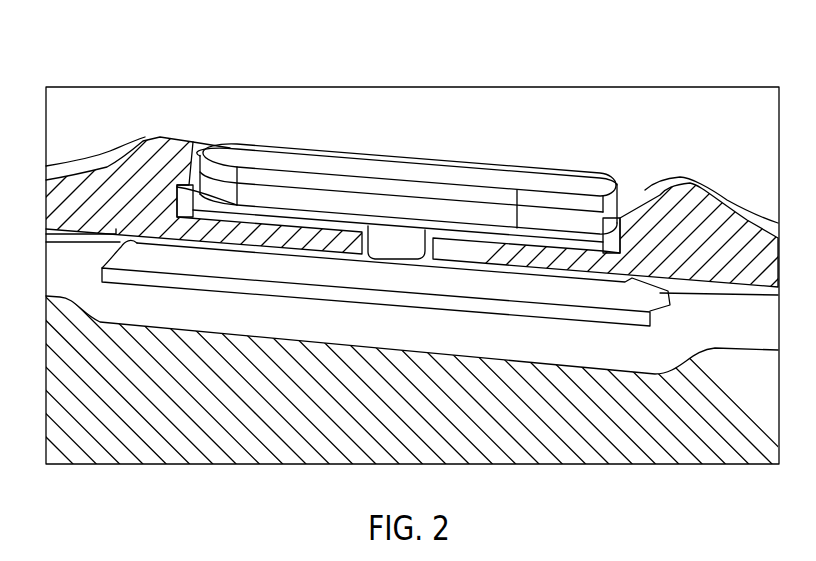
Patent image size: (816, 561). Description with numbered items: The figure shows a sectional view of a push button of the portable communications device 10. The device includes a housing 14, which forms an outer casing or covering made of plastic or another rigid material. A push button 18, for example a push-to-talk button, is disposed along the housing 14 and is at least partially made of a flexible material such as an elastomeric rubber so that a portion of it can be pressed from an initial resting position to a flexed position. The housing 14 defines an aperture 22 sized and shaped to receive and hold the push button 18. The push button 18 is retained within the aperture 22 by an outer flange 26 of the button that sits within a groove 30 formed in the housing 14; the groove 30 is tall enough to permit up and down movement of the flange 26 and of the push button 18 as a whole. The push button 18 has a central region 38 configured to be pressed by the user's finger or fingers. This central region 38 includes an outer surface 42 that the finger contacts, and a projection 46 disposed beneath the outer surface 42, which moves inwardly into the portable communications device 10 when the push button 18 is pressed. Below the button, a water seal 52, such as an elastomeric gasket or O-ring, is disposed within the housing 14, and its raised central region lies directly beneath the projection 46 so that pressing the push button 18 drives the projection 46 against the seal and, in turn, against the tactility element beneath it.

The portable communications device 10 is at (58, 68).
The housing 14 is at (713, 210).
The push button 18 is at (407, 168).
The aperture 22 is at (205, 152).
The outer flange 26 is at (426, 226).
The groove 30 is at (622, 243).
The central region 38 is at (405, 170).
The outer surface 42 is at (375, 168).
The projection 46 is at (393, 248).
The water seal 52 is at (556, 292).